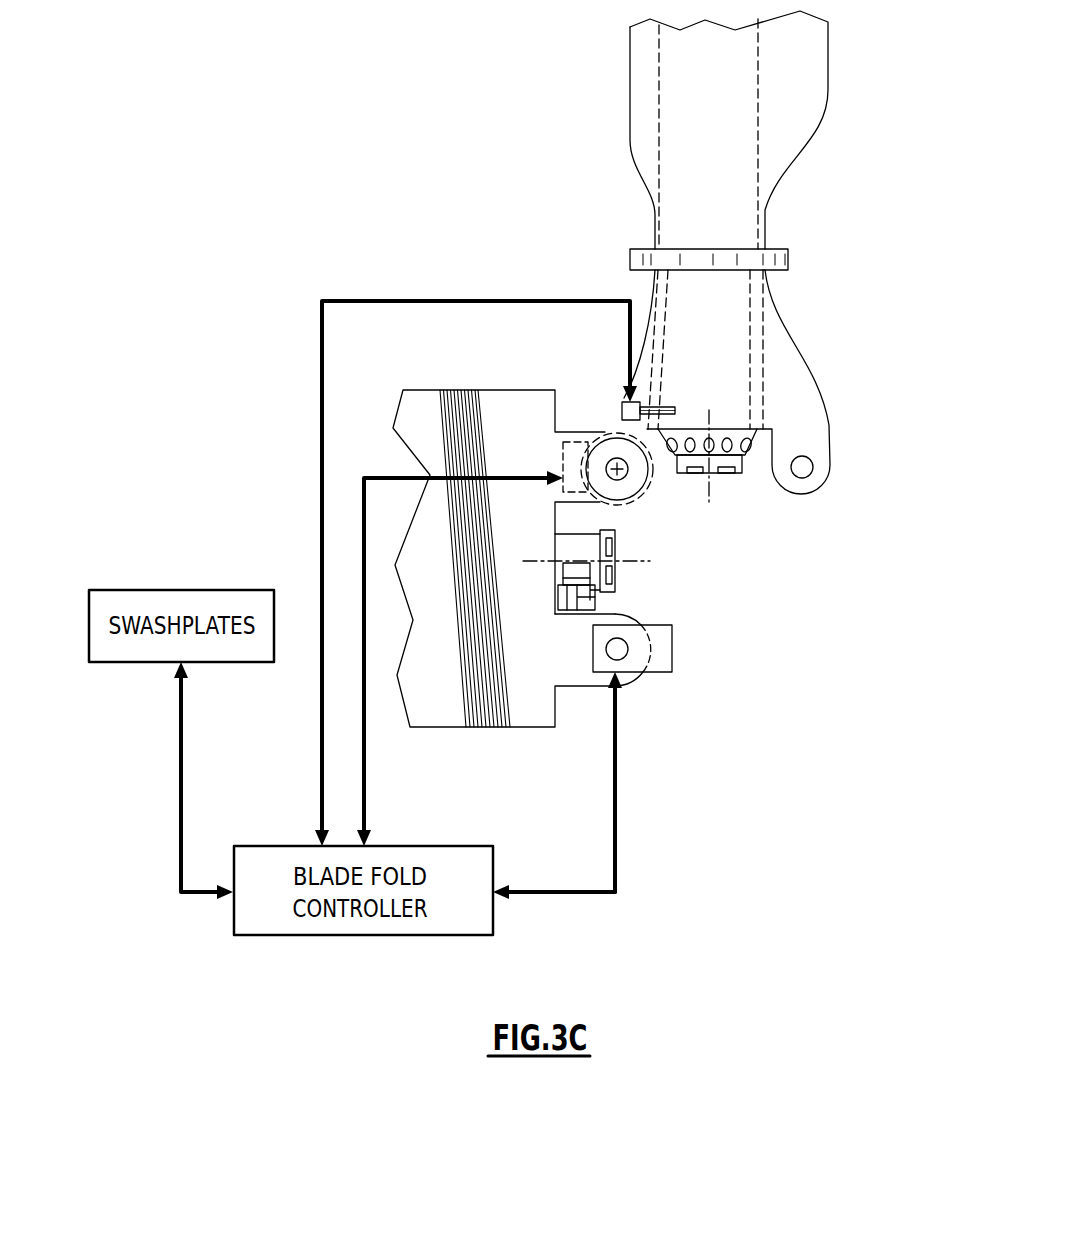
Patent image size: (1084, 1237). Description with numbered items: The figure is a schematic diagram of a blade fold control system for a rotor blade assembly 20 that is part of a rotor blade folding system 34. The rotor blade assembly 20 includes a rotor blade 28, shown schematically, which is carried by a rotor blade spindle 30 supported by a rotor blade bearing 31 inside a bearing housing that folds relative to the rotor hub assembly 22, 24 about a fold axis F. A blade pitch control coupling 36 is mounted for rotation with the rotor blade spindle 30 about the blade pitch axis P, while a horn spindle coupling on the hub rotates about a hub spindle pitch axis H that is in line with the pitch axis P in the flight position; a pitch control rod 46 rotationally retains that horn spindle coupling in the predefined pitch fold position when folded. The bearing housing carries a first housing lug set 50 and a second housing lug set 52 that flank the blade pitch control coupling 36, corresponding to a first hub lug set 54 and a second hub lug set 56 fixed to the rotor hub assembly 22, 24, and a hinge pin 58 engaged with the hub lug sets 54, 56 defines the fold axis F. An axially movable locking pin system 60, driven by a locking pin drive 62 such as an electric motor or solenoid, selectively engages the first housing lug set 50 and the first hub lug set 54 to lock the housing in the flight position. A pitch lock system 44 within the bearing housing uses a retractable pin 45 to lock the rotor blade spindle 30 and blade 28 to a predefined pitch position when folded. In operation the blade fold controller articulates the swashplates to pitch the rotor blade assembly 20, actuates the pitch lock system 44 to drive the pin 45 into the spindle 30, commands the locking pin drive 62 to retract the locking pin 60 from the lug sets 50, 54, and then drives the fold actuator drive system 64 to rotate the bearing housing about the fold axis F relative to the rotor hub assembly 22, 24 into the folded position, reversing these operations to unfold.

The rotor blade assembly 20 is at (612, 176).
The rotor hub assembly 22 is at (499, 582).
The rotor hub assembly 24 is at (455, 728).
The rotor blade 28 is at (805, 77).
The rotor blade spindle 30 is at (738, 318).
The rotor blade bearing 31 is at (755, 355).
The rotor blade folding system 34 is at (818, 648).
The blade pitch control coupling 36 is at (747, 457).
The pitch lock system 44 is at (617, 388).
The retractable pin 45 is at (648, 405).
The pitch control rod 46 is at (597, 595).
The first housing lug set 50 is at (838, 457).
The second housing lug set 52 is at (659, 458).
The first hub lug set 54 is at (622, 680).
The second hub lug set 56 is at (568, 435).
The hinge pin 58 is at (605, 468).
The axially movable locking pin system 60 is at (605, 648).
The locking pin drive 62 is at (665, 651).
The fold actuator drive system 64 is at (572, 493).
The fold axis F is at (612, 458).
The hub spindle pitch axis H is at (637, 562).
The blade pitch axis P is at (709, 505).